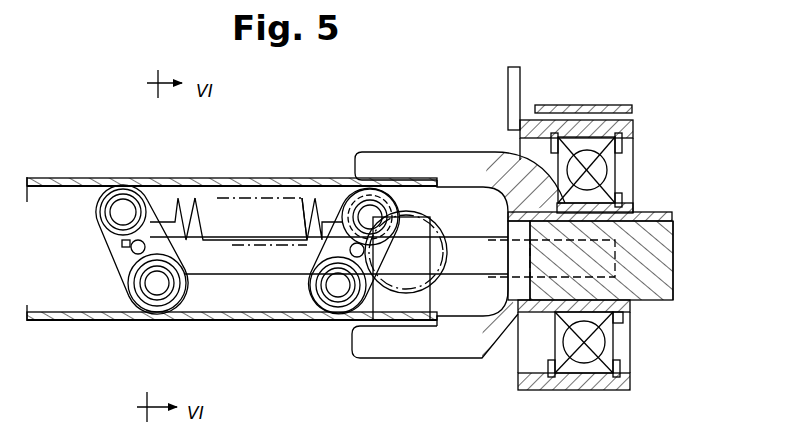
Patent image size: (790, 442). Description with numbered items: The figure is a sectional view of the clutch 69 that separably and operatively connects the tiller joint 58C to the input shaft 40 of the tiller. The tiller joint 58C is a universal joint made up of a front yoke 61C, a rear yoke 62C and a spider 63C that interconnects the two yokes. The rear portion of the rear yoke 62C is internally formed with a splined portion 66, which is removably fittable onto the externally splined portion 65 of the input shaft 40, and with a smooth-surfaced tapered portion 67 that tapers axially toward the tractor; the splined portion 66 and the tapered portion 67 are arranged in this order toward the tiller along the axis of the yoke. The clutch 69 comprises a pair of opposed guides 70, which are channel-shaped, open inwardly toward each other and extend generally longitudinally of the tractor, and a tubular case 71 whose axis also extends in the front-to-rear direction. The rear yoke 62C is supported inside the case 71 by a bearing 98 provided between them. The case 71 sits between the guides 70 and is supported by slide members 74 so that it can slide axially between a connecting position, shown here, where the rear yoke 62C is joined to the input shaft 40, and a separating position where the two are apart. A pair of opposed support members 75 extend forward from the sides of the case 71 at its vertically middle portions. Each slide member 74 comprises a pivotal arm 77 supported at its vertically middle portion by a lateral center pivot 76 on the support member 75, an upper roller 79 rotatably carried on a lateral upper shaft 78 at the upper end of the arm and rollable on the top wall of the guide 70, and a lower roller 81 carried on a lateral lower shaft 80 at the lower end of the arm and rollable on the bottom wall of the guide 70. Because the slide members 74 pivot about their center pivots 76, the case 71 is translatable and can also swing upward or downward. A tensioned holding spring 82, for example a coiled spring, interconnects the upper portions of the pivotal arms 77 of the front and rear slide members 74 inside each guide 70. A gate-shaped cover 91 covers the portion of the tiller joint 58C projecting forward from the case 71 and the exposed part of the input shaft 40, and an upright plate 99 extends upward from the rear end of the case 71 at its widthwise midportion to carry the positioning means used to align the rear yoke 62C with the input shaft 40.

The input shaft 40 is at (662, 290).
The tiller joint 58C is at (392, 147).
The front yoke 61C is at (342, 208).
The rear yoke 62C is at (465, 163).
The spider 63C is at (423, 200).
The externally splined portion 65 is at (643, 298).
The splined portion 66 is at (512, 293).
The tapered portion 67 is at (648, 215).
The clutch 69 is at (327, 327).
The guides 70 is at (90, 322).
The tubular case 71 is at (523, 385).
The slide members 74 is at (108, 248).
The support members 75 is at (283, 265).
The center pivot 76 is at (132, 251).
The pivotal arm 77 is at (167, 243).
The upper shaft 78 is at (130, 212).
The upper roller 79 is at (121, 190).
The lower shaft 80 is at (157, 287).
The lower roller 81 is at (185, 288).
The holding spring 82 is at (283, 200).
The gate-shaped cover 91 is at (608, 110).
The bearing 98 is at (585, 350).
The upright plate 99 is at (520, 84).